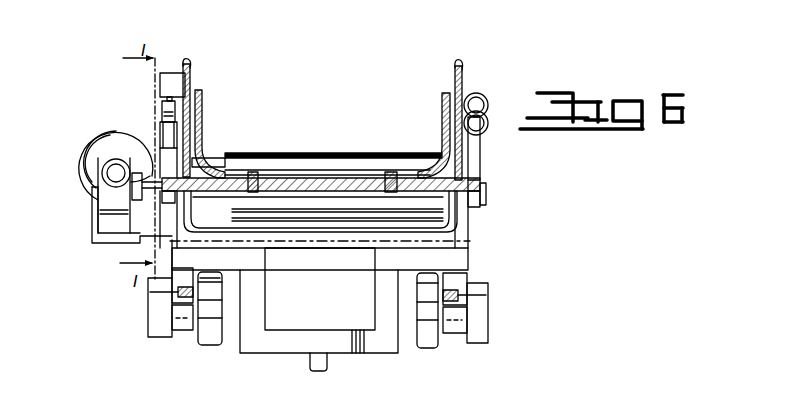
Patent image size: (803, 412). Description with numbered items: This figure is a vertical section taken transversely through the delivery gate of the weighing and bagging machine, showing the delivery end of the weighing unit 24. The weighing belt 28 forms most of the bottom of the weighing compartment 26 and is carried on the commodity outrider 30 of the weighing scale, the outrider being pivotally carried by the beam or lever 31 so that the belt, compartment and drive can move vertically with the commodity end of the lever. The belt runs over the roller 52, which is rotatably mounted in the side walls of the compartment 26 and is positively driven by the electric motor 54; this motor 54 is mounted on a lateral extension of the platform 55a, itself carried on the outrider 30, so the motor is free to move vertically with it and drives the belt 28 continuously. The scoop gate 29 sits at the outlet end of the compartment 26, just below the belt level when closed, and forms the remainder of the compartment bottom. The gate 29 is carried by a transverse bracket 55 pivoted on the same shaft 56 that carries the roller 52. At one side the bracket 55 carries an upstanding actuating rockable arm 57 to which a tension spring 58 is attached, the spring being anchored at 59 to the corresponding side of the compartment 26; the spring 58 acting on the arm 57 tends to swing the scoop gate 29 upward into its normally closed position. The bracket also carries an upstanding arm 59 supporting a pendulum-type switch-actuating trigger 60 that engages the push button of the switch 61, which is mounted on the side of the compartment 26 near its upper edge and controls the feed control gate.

The weighing unit 24 is at (186, 40).
The weighing compartment 26 is at (463, 68).
The weighing belt 28 is at (288, 155).
The scoop gate 29 is at (441, 100).
The commodity outrider 30 is at (466, 262).
The beam or lever 31 is at (212, 343).
The roller 52 is at (213, 162).
The electric motor 54 is at (88, 146).
The transverse bracket 55 is at (433, 191).
The platform 55a is at (118, 232).
The shaft 56 is at (146, 196).
The actuating rockable arm 57 is at (482, 150).
The tension spring 58 is at (480, 106).
The upstanding arm 59 is at (160, 150).
The switch-actuating trigger 60 is at (163, 120).
The switch 61 is at (160, 78).